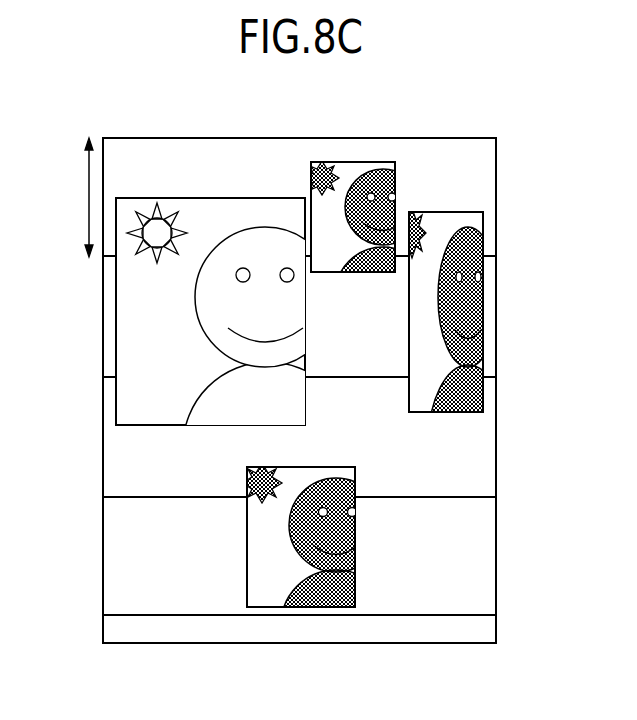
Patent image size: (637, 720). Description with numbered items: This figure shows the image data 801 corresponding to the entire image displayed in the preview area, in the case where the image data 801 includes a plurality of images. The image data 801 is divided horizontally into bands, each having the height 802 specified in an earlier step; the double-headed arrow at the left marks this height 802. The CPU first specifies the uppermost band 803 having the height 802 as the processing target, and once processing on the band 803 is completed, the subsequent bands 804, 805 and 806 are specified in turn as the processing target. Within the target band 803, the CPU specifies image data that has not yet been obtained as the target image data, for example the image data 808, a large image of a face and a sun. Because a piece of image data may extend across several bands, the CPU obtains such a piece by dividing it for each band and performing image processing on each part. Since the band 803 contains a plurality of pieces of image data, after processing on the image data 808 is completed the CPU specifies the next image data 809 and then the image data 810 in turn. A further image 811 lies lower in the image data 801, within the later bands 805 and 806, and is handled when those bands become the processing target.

The image data 801 is at (171, 137).
The height 802 is at (88, 197).
The band 803 is at (470, 150).
The band 804 is at (490, 315).
The band 805 is at (490, 447).
The band 806 is at (490, 553).
The image data 808 is at (264, 210).
The image data 809 is at (366, 170).
The image data 810 is at (472, 222).
The third sub image 811 is at (265, 594).